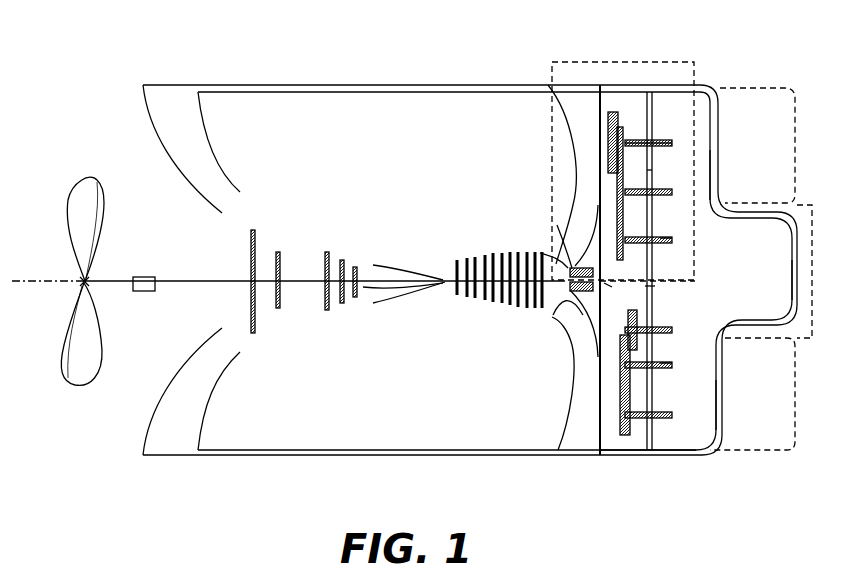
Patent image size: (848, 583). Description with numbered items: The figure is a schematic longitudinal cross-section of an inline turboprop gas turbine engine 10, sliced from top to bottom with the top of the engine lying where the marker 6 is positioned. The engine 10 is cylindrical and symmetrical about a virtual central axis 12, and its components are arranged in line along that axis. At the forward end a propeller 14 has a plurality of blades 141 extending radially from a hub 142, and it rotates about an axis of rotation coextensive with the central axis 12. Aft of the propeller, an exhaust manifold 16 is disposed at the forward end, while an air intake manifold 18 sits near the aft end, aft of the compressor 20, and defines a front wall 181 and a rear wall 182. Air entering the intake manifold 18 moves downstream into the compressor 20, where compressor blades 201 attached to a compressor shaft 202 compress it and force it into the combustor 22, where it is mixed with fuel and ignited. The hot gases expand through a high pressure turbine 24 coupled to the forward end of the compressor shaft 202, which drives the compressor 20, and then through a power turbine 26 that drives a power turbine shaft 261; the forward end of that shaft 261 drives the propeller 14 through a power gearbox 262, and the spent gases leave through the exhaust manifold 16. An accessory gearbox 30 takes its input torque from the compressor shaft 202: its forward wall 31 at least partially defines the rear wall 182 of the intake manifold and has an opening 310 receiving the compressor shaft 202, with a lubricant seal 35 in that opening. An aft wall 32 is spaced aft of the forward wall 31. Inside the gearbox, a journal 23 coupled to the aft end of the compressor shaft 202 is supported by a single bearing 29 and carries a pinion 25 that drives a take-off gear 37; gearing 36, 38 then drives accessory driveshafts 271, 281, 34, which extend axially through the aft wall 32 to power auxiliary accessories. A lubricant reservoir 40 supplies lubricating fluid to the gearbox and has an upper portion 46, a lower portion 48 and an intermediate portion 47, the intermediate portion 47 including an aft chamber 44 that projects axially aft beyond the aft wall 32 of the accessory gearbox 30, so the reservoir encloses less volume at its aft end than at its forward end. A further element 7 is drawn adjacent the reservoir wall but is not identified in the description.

The inline turboprop gas turbine engine 10 is at (90, 47).
The virtual central axis 12 is at (40, 281).
The propeller 14 is at (87, 290).
The blades 141 is at (100, 226).
The hub 142 is at (92, 278).
The exhaust manifold 16 is at (180, 85).
The power gearbox 262 is at (147, 292).
The power turbine 26 is at (279, 278).
The power turbine shaft 261 is at (263, 285).
The high pressure turbine 24 is at (337, 251).
The combustor 22 is at (373, 265).
The compressor shaft 202 is at (373, 303).
The compressor 20 is at (487, 248).
The compressor blades 201 is at (480, 262).
The top of the engine 6 is at (637, 60).
The air intake manifold 18 is at (538, 258).
The front wall 181 is at (598, 182).
The rear wall 182 is at (598, 118).
The lubricant seal 35 is at (568, 272).
The bearing 29 is at (570, 266).
The take-off gear 37 is at (597, 197).
The gear 38 is at (606, 147).
The opening 310 is at (554, 316).
The forward wall 31 is at (605, 105).
The accessory gearbox 30 is at (605, 455).
The aft wall 32 is at (653, 100).
The gear 36 is at (624, 188).
The accessory driveshaft 34 is at (660, 238).
The accessory driveshaft 271 is at (662, 142).
The accessory driveshaft 281 is at (658, 176).
The journal 23 is at (606, 287).
The pinion 25 is at (649, 288).
The exhaust duct wall 7 is at (722, 187).
The aft chamber 44 is at (767, 292).
The lubricant reservoir 40 is at (703, 420).
The upper portion 46 is at (796, 146).
The intermediate portion 47 is at (812, 285).
The lower portion 48 is at (796, 397).